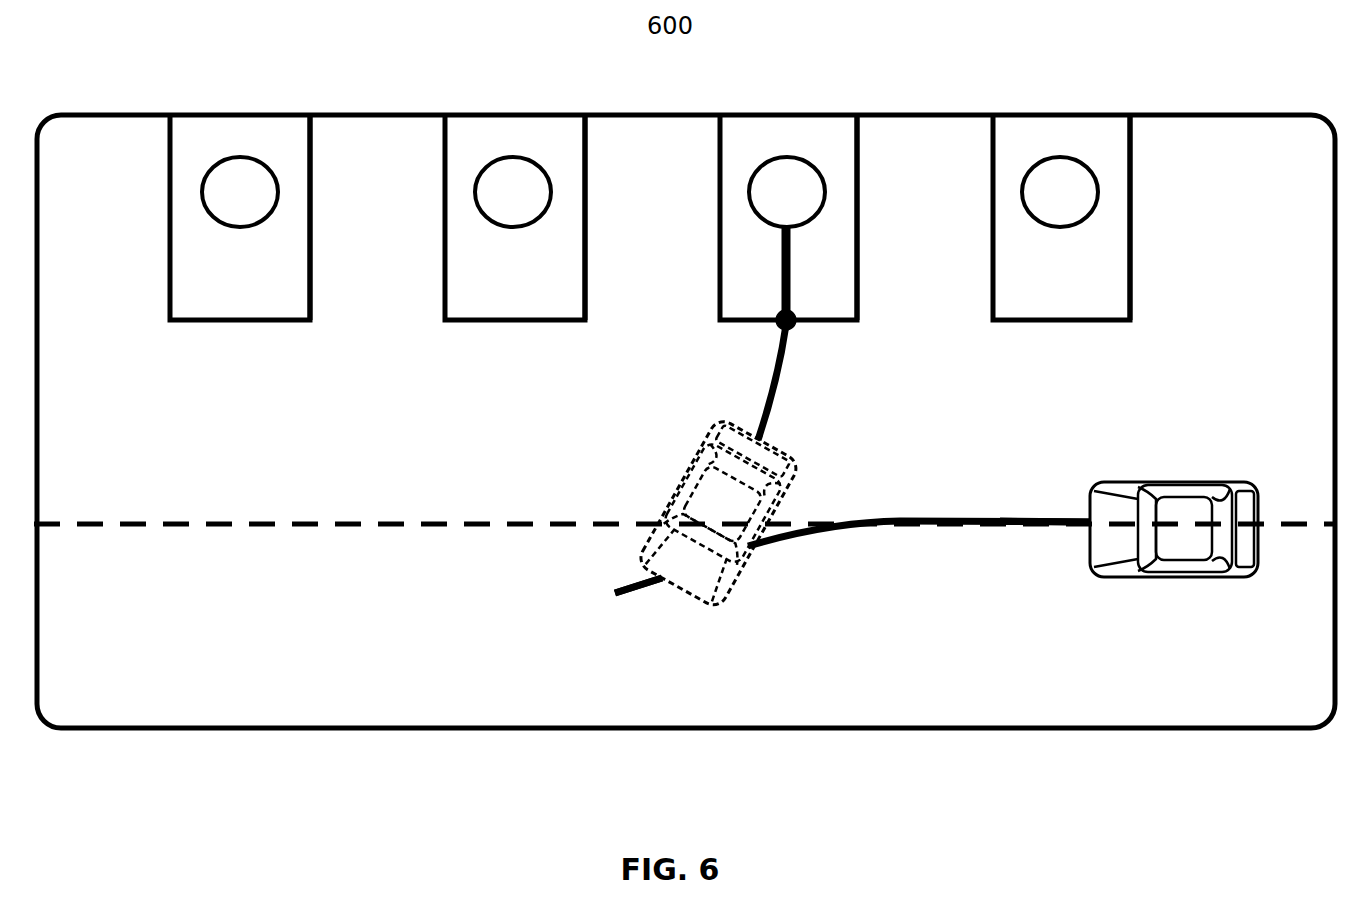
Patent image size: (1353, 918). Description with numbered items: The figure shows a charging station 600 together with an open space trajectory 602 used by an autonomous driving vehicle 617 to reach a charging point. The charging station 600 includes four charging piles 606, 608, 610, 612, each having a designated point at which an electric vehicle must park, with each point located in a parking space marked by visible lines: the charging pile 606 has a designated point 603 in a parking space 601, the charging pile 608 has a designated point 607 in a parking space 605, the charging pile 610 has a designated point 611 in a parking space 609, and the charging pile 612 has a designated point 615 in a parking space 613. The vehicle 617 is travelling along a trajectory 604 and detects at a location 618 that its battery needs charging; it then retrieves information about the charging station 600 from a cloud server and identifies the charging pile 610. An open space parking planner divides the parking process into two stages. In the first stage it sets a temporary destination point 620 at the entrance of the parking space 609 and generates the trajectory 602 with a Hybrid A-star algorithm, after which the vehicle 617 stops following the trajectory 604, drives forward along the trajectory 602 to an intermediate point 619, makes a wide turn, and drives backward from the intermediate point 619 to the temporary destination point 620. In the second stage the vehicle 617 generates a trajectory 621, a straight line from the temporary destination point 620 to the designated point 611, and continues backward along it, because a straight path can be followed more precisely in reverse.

The charging station 600 is at (686, 421).
The parking space 601 is at (312, 262).
The open space trajectory 602 is at (818, 565).
The designated point 603 is at (278, 188).
The trajectory 604 is at (251, 530).
The parking space 605 is at (587, 262).
The charging pile 606 is at (216, 367).
The designated point 607 is at (551, 188).
The charging pile 608 is at (488, 367).
The parking space 609 is at (859, 262).
The charging pile 610 is at (709, 367).
The designated point Pe 611 is at (826, 186).
The charging pile 612 is at (1043, 367).
The parking space 613 is at (1132, 262).
The designated point 615 is at (1098, 186).
The autonomous driving vehicle 617 is at (1161, 536).
The location 618 is at (1172, 578).
The point P1 619 is at (618, 597).
The temporary destination point P2 620 is at (795, 327).
The trajectory 621 is at (791, 270).